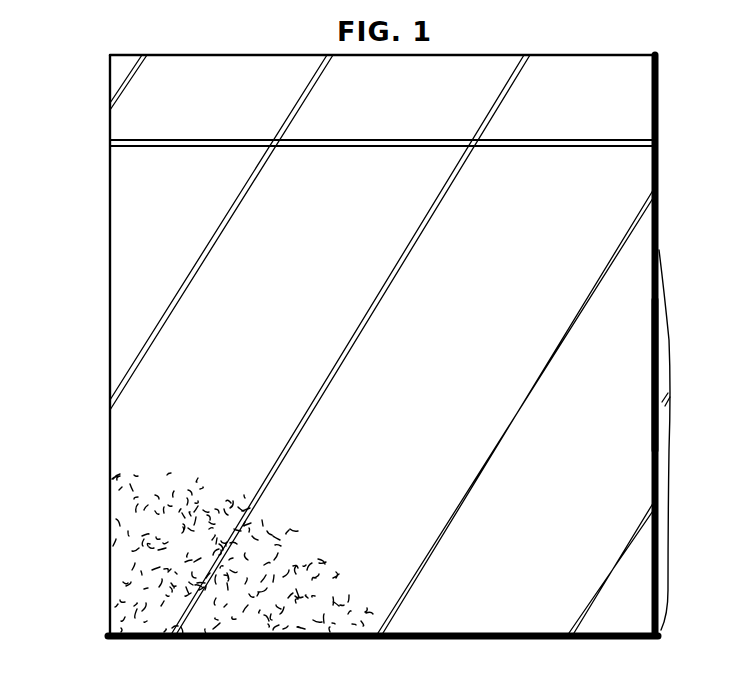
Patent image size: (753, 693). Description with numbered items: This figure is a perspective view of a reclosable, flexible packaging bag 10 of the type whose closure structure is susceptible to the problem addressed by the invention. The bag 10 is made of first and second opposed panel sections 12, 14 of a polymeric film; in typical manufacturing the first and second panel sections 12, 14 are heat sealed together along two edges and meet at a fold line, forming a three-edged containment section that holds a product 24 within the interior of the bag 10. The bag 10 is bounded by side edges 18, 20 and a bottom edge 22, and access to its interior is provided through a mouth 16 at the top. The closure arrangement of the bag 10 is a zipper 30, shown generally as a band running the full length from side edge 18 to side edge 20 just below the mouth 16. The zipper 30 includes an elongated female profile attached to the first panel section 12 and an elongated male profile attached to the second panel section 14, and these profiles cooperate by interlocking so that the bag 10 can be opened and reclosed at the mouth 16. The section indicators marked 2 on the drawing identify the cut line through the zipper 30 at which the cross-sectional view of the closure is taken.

The flexible bag 10 is at (50, 60).
The first panel section 12 is at (629, 378).
The second panel section 14 is at (667, 479).
The mouth 16 is at (257, 52).
The side edge 18 is at (109, 358).
The side edge 20 is at (659, 219).
The bottom edge 22 is at (515, 640).
The product 24 is at (132, 562).
The zipper 30 is at (416, 180).
The section line 2- 2 is at (218, 88).